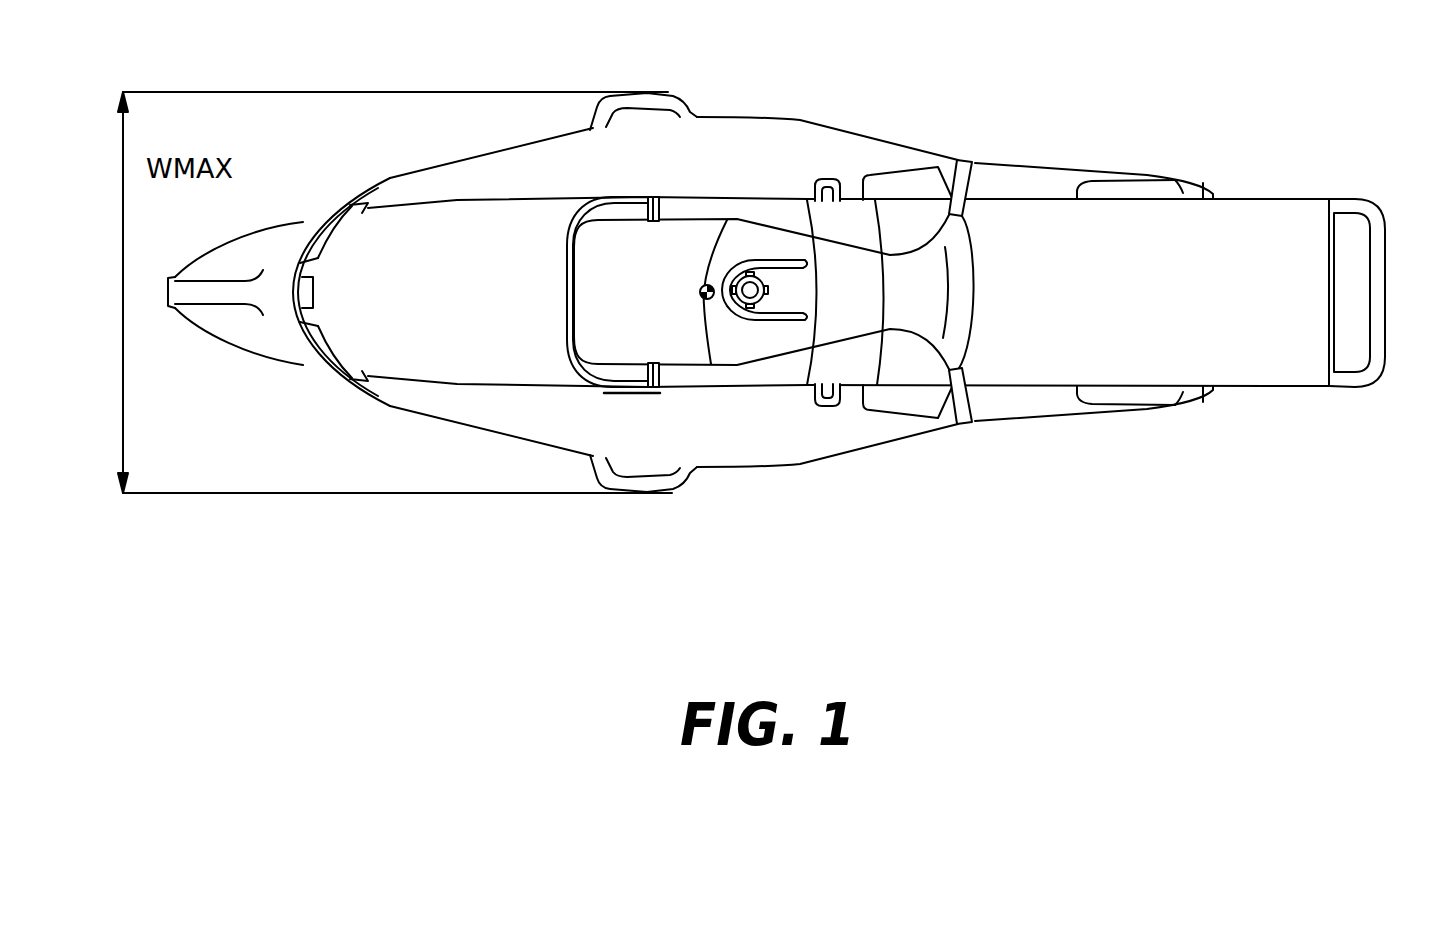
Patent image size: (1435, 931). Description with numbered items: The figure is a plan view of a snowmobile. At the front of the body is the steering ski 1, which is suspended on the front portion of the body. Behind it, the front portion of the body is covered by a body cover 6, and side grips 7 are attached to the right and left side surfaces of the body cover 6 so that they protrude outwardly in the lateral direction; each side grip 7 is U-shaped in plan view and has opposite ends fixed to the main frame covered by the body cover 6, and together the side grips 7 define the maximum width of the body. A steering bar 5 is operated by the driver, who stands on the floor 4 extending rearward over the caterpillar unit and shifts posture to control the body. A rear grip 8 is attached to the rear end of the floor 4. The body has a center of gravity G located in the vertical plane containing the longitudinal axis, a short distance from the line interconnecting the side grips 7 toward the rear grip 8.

The steering ski 1 is at (300, 221).
The floor 4 is at (1163, 306).
The steering bar 5 is at (970, 406).
The body cover 6 is at (495, 163).
The side grips 7 is at (667, 92).
The rear grip 8 is at (1384, 307).
The center of gravity G is at (704, 285).